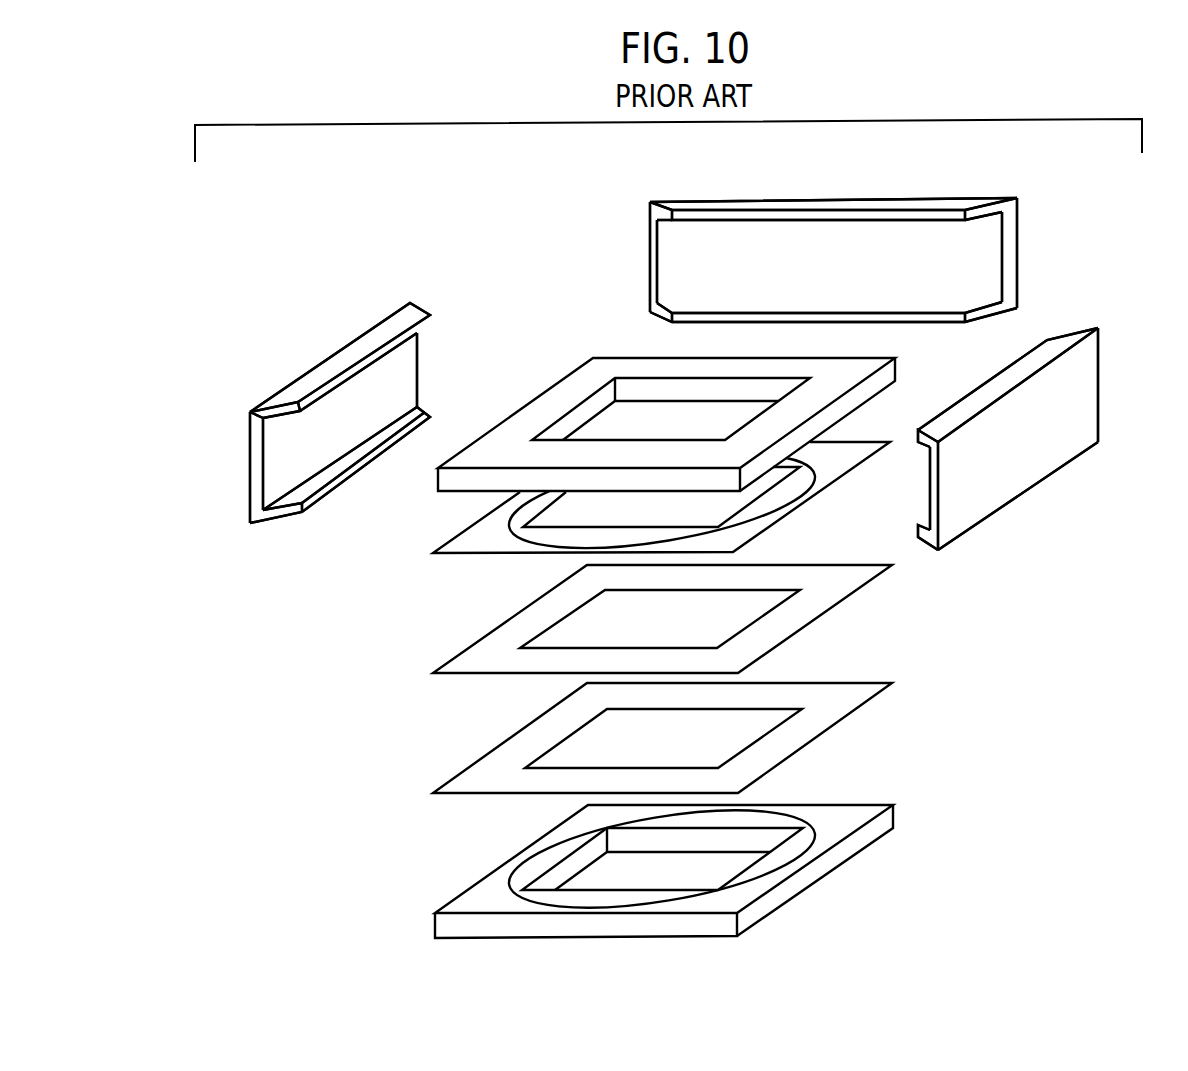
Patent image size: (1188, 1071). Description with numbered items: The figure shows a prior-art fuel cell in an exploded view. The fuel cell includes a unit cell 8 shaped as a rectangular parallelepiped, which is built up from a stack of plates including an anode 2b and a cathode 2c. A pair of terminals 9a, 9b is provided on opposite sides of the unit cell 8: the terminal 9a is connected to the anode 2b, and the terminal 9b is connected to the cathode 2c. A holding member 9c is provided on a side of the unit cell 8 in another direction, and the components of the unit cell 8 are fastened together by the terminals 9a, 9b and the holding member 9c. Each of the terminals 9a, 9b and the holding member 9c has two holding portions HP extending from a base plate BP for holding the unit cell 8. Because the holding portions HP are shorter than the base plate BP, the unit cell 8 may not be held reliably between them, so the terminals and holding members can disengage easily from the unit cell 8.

The unit cell 8 is at (593, 648).
The anode 2b is at (753, 612).
The cathode 2c is at (580, 623).
The terminal 9a is at (1010, 513).
The terminal 9b is at (287, 363).
The holding member 9c is at (858, 188).
The holding portion HP is at (697, 202).
The base plate BP is at (1010, 262).